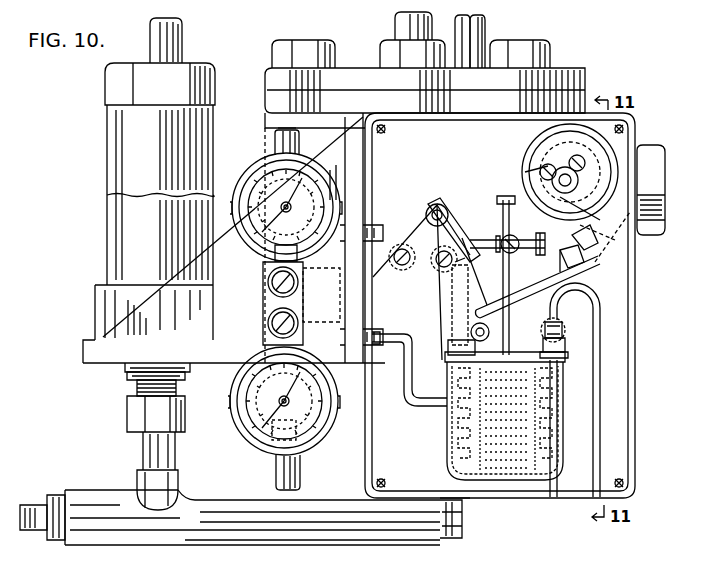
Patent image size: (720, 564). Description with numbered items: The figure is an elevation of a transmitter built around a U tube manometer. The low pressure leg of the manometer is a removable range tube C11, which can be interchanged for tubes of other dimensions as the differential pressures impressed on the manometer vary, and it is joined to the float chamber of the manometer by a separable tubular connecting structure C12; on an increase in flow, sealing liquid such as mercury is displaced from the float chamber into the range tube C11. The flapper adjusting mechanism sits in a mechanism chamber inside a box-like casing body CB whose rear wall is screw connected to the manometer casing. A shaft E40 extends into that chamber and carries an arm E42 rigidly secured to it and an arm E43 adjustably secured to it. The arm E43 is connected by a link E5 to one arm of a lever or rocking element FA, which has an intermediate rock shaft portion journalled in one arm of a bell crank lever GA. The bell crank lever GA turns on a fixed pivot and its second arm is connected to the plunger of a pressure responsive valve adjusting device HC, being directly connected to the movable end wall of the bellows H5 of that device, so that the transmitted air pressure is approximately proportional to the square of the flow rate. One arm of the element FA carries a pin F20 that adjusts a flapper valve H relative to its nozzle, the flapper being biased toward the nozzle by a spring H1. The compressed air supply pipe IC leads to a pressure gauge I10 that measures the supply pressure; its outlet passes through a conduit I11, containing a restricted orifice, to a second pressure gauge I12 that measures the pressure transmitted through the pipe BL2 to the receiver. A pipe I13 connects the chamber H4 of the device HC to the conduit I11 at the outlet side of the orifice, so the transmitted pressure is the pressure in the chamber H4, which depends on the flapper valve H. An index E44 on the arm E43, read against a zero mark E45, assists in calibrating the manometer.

The range tube C11 is at (118, 150).
The compressed air supply pipe IC is at (277, 140).
The pressure gauge I10 is at (262, 170).
The conduit I11 is at (272, 306).
The pressure gauge I12 is at (260, 364).
The pipe BL2 is at (276, 476).
The separable tubular connecting structure C12 is at (218, 503).
The pipe I13 is at (414, 382).
The lever or rocking element FA is at (452, 286).
The pin or projection F20 is at (436, 233).
The bell crank lever GA is at (475, 238).
The flapper valve H is at (478, 275).
The spring H1 is at (503, 315).
The shaft E40 is at (545, 170).
The arm E42 is at (540, 200).
The arm E43 is at (588, 238).
The link E5 is at (577, 258).
The index E44 is at (584, 296).
The zero mark E45 is at (563, 330).
The chamber H4 is at (554, 420).
The bellows H5 is at (554, 452).
The pressure responsive valve adjusting device HC is at (447, 441).
The casing body CB is at (520, 499).